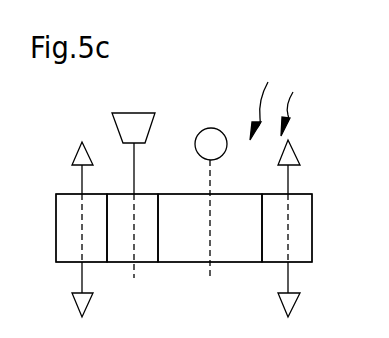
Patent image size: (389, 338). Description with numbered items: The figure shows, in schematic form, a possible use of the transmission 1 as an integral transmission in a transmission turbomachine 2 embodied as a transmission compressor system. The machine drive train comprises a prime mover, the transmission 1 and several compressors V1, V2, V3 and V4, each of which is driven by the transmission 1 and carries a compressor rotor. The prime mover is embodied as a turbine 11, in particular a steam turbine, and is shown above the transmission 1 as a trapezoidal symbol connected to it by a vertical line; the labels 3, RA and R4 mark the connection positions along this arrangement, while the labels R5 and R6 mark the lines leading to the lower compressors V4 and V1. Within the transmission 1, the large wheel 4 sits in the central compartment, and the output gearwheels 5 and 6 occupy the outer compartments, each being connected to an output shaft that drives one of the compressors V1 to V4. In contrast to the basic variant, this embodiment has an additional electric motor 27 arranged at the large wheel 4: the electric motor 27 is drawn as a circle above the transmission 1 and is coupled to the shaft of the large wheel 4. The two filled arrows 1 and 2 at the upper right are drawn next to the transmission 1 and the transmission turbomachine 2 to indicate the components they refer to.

The transmission 1 is at (260, 106).
The transmission turbomachine 2 is at (292, 101).
The valve position 3 is at (123, 242).
The large wheel 4 is at (188, 242).
The output gearwheel 5 is at (302, 242).
The output gearwheel 6 is at (67, 229).
The turbine 11 is at (134, 127).
The electric motor 27 is at (211, 138).
The control port RA is at (134, 172).
The control port R4 is at (210, 172).
The port R5 is at (288, 276).
The port R6 is at (82, 277).
The compressor V1 is at (74, 309).
The compressor V2 is at (70, 152).
The compressor V3 is at (300, 152).
The compressor V4 is at (300, 309).